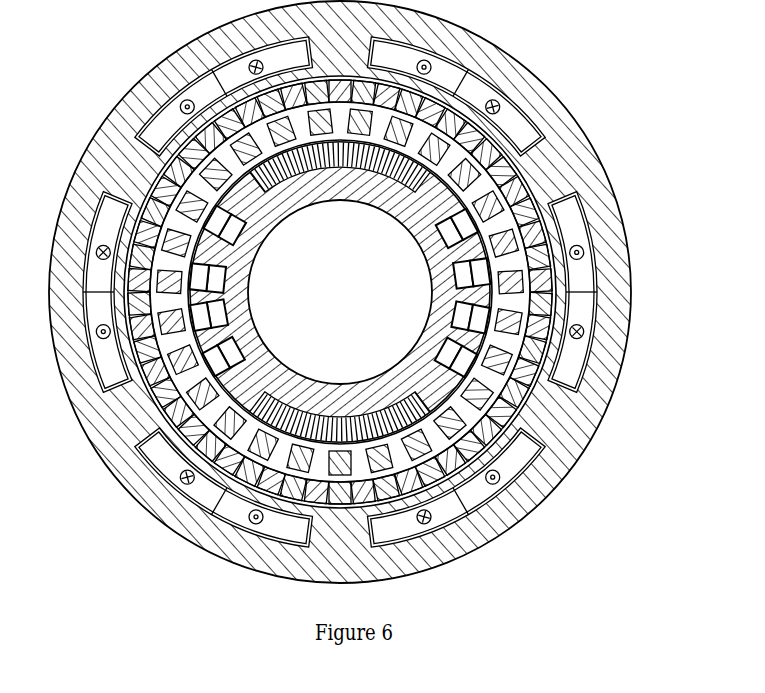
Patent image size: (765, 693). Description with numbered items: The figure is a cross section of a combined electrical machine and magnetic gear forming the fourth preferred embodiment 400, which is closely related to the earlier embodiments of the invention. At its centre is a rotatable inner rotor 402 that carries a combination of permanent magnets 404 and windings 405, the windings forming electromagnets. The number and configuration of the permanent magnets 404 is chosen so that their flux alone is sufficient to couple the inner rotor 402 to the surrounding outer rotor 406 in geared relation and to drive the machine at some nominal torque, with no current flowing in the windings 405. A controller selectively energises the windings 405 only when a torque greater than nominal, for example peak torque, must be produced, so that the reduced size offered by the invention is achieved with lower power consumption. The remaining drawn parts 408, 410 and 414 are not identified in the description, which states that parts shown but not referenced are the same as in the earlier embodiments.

The fourth preferred embodiment 400 is at (543, 503).
The inner rotor 402 is at (324, 196).
The permanent magnets 404 is at (393, 192).
The windings 405 is at (220, 272).
The outer rotor 406 is at (482, 187).
The stator windings 408 is at (490, 207).
The housing 410 is at (527, 403).
The mounting bar 414 is at (517, 124).